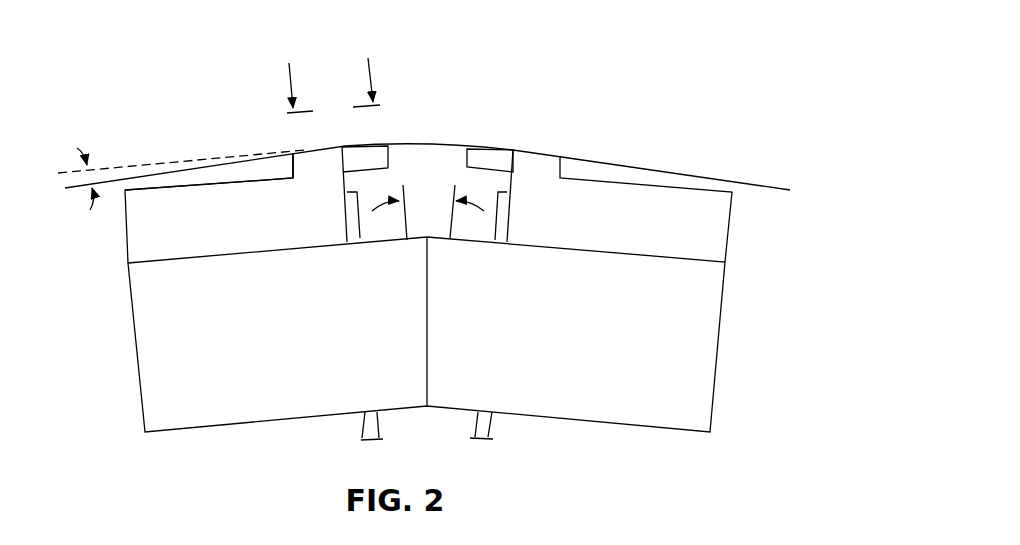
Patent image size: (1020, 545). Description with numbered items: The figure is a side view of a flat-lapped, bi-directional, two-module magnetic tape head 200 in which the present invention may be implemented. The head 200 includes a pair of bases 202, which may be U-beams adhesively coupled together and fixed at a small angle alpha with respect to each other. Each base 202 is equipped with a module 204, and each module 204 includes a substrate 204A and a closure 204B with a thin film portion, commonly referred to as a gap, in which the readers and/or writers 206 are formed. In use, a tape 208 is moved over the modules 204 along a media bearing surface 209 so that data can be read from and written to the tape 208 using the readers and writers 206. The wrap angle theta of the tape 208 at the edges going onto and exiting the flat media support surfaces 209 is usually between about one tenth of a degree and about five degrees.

The magnetic tape head 200 is at (174, 115).
The base 202 is at (133, 326).
The module 204 is at (429, 187).
The substrate 204A is at (183, 212).
The closure 204B is at (466, 158).
The readers and/or writers 206 is at (344, 143).
The tape 208 is at (650, 167).
The media bearing surface 209 is at (297, 150).